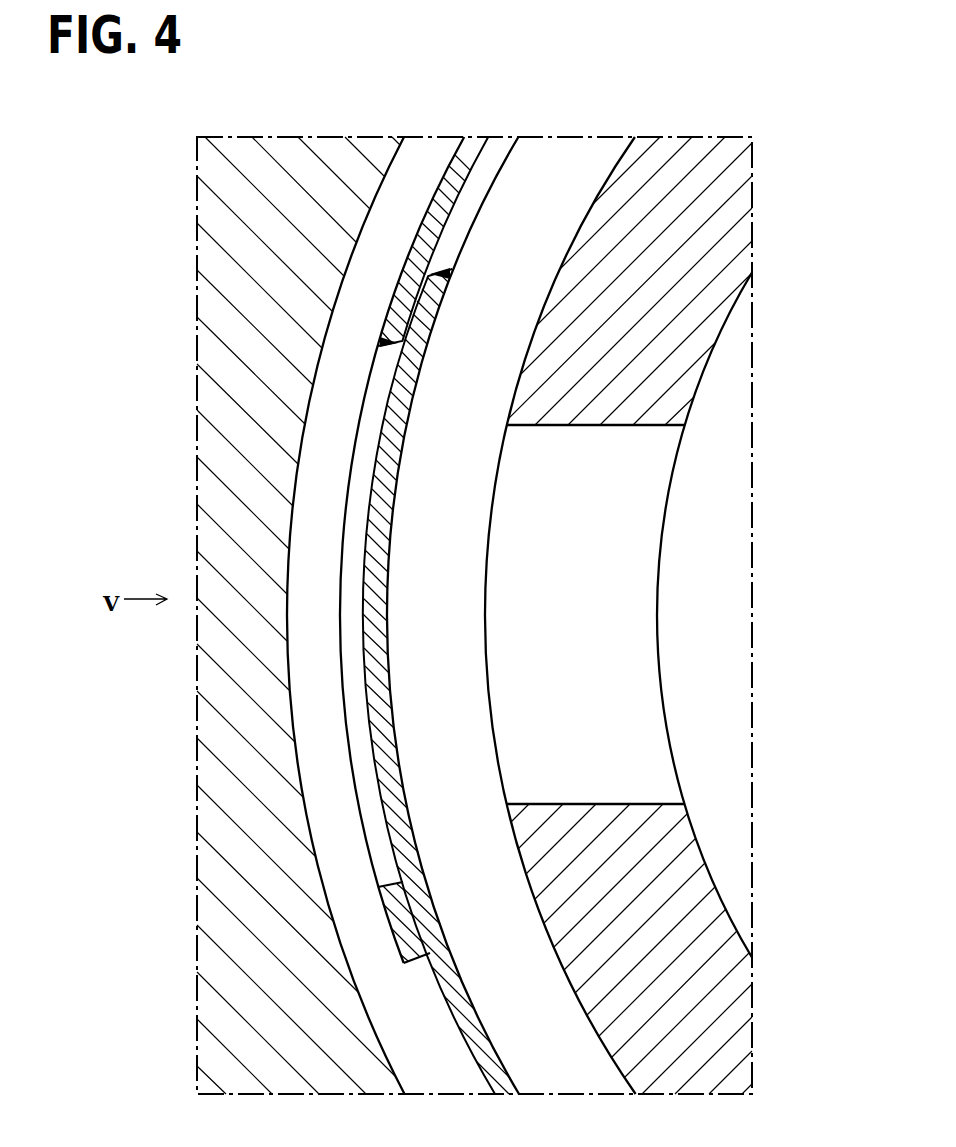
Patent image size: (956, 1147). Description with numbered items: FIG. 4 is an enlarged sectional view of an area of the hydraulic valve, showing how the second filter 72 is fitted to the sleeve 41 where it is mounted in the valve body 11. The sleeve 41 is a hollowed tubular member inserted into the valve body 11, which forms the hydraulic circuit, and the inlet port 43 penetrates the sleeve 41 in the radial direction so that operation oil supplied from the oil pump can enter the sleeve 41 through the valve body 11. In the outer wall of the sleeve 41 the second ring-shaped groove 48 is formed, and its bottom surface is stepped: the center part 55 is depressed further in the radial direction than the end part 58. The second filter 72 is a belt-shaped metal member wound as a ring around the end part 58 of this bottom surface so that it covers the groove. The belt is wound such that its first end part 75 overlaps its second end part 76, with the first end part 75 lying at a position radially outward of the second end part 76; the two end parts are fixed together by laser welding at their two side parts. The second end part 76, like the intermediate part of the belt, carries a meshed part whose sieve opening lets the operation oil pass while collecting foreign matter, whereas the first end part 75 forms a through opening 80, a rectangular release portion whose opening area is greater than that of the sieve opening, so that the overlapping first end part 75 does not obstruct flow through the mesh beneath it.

The valve body 11 is at (222, 1056).
The sleeve 41 is at (673, 888).
The inlet port 43 is at (572, 616).
The second ring-shaped groove 48 is at (330, 433).
The center part 55 is at (518, 380).
The end part 58 is at (438, 245).
The second filter 72 is at (418, 201).
The first end part 75 is at (402, 918).
The second end part 76 is at (430, 305).
The through opening 80 is at (390, 878).